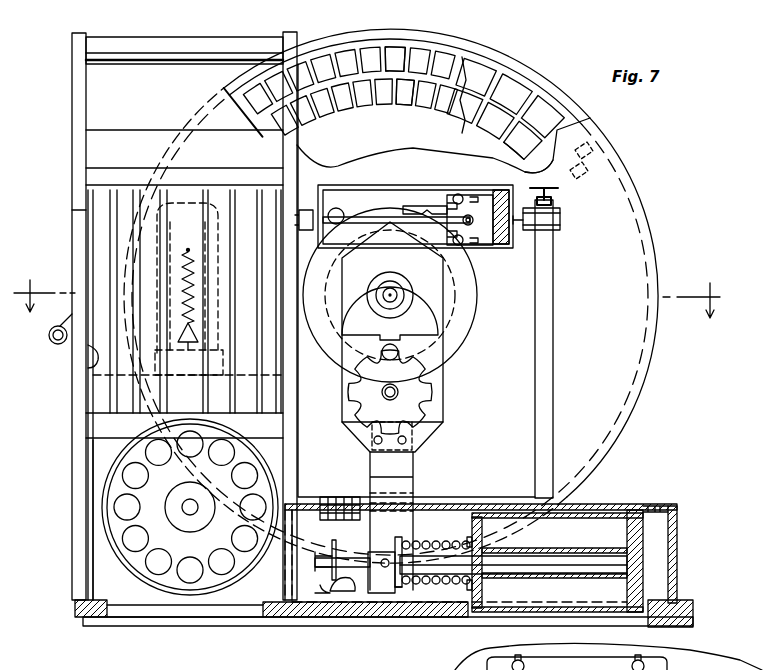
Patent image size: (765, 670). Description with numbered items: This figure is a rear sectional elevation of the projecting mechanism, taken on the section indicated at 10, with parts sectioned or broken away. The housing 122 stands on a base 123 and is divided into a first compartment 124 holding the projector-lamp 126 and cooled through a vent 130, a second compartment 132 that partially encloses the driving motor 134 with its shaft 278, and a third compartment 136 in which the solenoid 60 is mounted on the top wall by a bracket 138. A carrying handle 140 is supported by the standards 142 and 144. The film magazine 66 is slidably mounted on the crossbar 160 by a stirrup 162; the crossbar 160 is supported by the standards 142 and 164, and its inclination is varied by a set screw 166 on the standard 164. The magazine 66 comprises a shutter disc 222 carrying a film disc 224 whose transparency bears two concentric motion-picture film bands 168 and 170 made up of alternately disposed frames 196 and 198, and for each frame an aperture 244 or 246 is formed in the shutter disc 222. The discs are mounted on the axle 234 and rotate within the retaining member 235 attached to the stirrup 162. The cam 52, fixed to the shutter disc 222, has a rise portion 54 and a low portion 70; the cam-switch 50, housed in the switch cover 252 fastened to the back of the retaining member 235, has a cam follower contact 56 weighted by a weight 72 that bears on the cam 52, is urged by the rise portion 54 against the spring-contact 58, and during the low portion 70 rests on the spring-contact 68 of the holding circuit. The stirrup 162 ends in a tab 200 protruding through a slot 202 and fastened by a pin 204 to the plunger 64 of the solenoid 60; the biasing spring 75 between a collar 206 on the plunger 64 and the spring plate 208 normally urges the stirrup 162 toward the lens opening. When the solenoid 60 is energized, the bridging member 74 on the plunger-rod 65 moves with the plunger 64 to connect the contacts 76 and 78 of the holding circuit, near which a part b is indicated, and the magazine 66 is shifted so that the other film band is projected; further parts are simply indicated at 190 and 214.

The section line 10 is at (373, 293).
The cam-switch 50 is at (480, 222).
The cam 52 is at (450, 304).
The rise portion 54 is at (390, 228).
The cam follower contact 56 is at (346, 222).
The spring-contact 58 is at (431, 207).
The solenoid 60 is at (588, 515).
The plunger 64 is at (513, 565).
The plunger-rod 65 is at (352, 593).
The film magazine 66 is at (641, 201).
The spring-contact 68 is at (464, 226).
The low portion 70 is at (448, 322).
The weight 72 is at (342, 210).
The bridging member 74 is at (331, 573).
The spring 75 is at (425, 542).
The contact 76 is at (358, 527).
The contact 78 is at (366, 593).
The lever b is at (322, 594).
The housing 122 is at (75, 592).
The base 123 is at (694, 610).
The first compartment 124 is at (90, 360).
The projector-lamp 126 is at (189, 289).
The vent 130 is at (114, 236).
The second compartment 132 is at (94, 566).
The driving motor 134 is at (112, 526).
The third compartment 136 is at (628, 506).
The bracket 138 is at (644, 541).
The carrying handle 140 is at (148, 39).
The standard 142 is at (297, 36).
The standard 144 is at (72, 92).
The crossbar 160 is at (561, 237).
The stirrup 162 is at (444, 394).
The standard 164 is at (553, 274).
The set screw 166 is at (554, 191).
The film band 168 is at (536, 112).
The film band 170 is at (462, 130).
The roller 190 is at (54, 342).
The frame 196 is at (553, 128).
The frame 198 is at (520, 158).
The tab 200 is at (404, 468).
The slot 202 is at (457, 503).
The pin 204 is at (385, 568).
The collar 206 is at (402, 587).
The spring plate 208 is at (468, 590).
The lamp unit 214 is at (630, 666).
The shutter disc 222 is at (488, 52).
The film disc 224 is at (508, 77).
The axle 234 is at (388, 300).
The retaining member 235 is at (649, 268).
The aperture 244 is at (402, 55).
The aperture 246 is at (413, 82).
The switch cover 252 is at (386, 186).
The shaft 278 is at (190, 512).